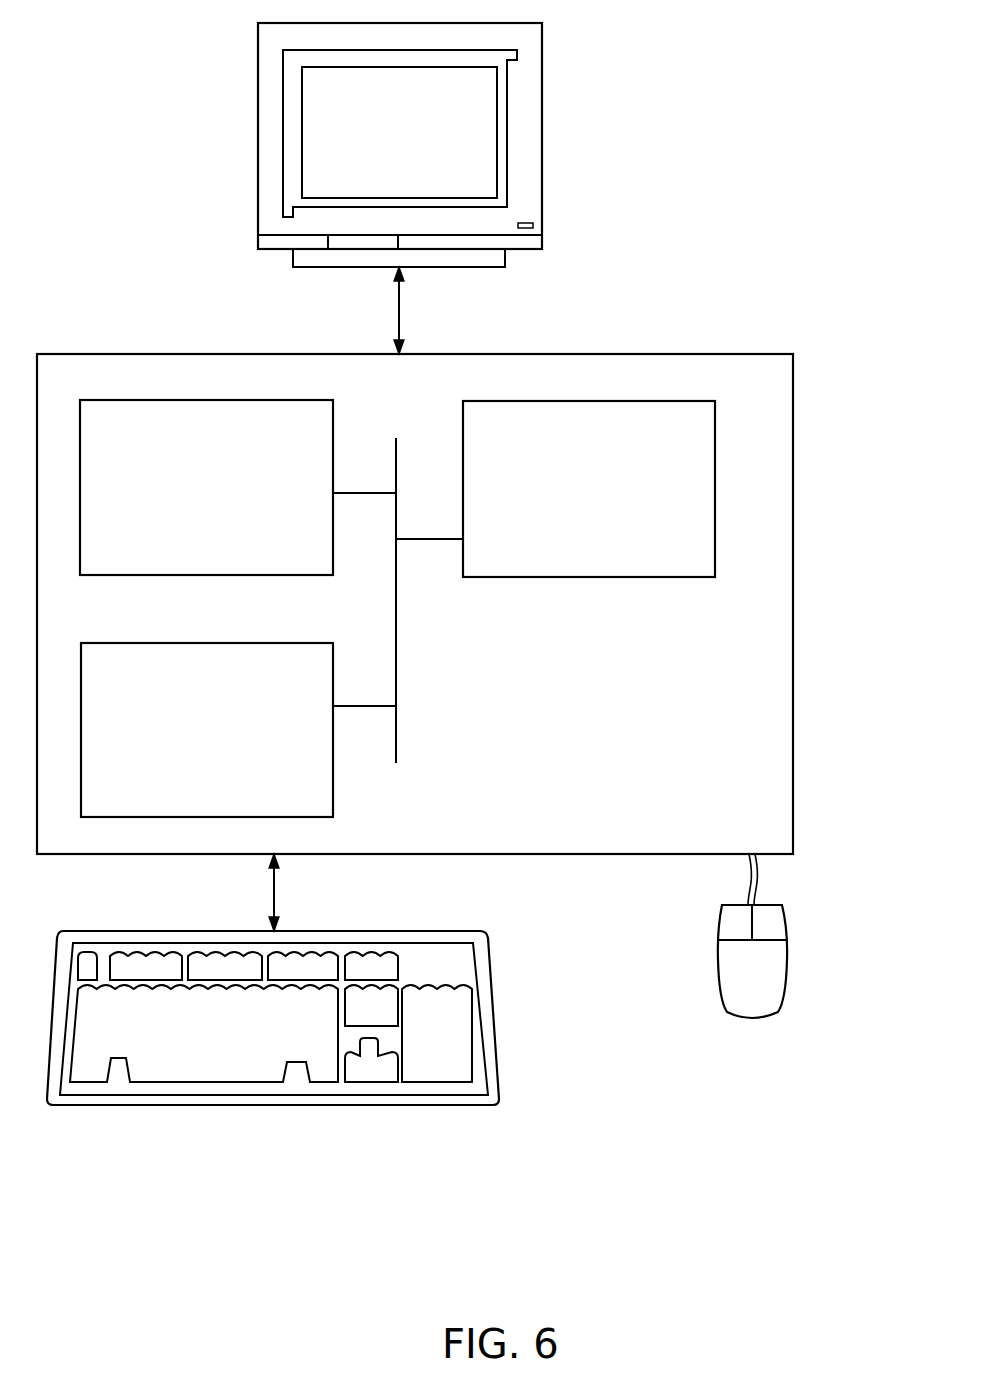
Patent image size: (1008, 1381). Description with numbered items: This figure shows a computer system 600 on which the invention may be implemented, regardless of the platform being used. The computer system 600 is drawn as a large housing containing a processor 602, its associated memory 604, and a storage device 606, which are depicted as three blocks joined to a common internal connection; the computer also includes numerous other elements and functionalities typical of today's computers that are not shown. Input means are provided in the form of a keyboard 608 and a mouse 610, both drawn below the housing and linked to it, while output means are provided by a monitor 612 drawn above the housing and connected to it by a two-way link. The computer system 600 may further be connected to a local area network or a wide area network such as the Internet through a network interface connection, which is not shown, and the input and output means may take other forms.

The computer system 600 is at (808, 198).
The processor 602 is at (232, 501).
The memory 604 is at (227, 743).
The storage device 606 is at (610, 503).
The keyboard 608 is at (250, 1047).
The mouse 610 is at (776, 986).
The monitor 612 is at (423, 147).